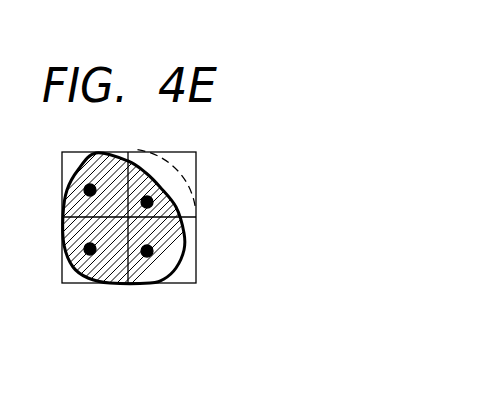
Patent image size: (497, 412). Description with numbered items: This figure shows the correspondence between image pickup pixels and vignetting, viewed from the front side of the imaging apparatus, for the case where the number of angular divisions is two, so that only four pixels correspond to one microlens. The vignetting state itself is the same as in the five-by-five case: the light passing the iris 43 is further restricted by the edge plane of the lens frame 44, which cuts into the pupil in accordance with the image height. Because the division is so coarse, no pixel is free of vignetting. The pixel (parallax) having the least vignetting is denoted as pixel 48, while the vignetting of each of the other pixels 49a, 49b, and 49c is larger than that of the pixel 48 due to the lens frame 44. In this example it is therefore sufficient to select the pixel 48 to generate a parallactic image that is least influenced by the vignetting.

The iris 43 is at (85, 287).
The lens frame 44 is at (187, 225).
The pixel 48 is at (90, 249).
The pixel 49a is at (147, 202).
The pixel 49b is at (90, 190).
The pixel 49c is at (147, 251).